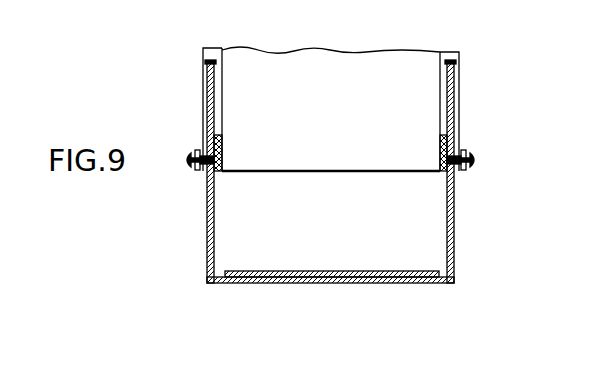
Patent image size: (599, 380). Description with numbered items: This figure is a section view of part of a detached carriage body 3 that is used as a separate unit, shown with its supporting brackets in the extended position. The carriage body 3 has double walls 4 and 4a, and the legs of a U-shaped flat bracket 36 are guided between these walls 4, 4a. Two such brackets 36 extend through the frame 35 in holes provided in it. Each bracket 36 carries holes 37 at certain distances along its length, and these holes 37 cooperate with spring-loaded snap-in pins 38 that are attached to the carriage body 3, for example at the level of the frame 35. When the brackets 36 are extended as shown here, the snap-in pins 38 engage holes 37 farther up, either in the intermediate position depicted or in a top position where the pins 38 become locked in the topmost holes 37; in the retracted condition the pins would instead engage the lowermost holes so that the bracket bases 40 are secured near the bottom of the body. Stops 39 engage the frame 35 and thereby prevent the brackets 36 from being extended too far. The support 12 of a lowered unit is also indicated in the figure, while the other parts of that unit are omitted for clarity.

The carriage body 3 is at (342, 101).
The wall 4 is at (207, 62).
The wall 4a is at (223, 62).
The support 12 is at (308, 271).
The frame 35 is at (222, 144).
The U-shaped flat bracket 36 is at (190, 233).
The holes 37 is at (451, 80).
The snap-in pins 38 is at (199, 157).
The stops 39 is at (208, 63).
The bracket bases 40 is at (345, 283).